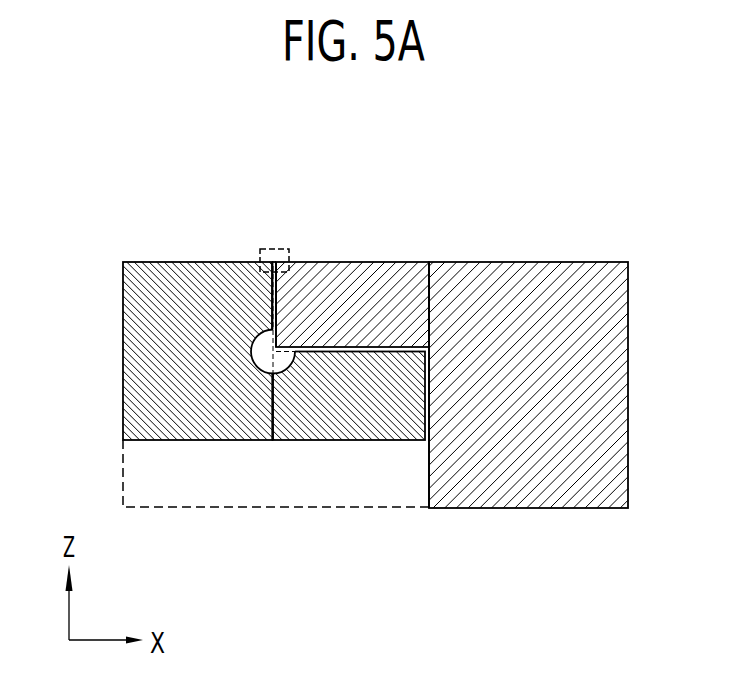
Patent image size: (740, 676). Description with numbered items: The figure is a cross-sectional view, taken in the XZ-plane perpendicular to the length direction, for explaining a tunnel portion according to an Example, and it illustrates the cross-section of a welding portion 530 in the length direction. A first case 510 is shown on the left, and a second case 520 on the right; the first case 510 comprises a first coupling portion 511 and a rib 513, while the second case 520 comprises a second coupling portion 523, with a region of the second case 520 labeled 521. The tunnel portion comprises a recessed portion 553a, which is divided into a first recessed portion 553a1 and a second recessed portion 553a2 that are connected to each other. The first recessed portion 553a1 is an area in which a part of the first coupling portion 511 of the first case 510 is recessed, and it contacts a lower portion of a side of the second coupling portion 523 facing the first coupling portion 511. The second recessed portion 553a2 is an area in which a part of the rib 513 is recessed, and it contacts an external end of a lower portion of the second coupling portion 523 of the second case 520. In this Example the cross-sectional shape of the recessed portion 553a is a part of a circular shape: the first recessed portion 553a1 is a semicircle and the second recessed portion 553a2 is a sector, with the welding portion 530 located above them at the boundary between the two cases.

The first case 510 is at (182, 241).
The first coupling portion 511 is at (173, 440).
The rib 513 is at (388, 440).
The second case 520 is at (537, 241).
The second housing member side surface 521 is at (465, 262).
The second coupling portion 523 is at (383, 262).
The welding portion 530 is at (277, 249).
The recessed portion 553a is at (278, 436).
The first recessed portion 553a1 is at (256, 368).
The second recessed portion 553a2 is at (289, 369).